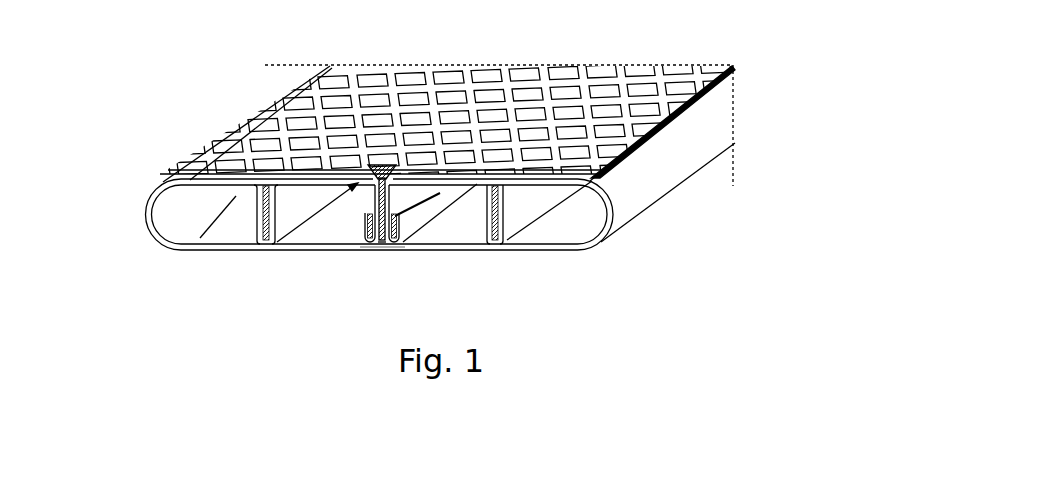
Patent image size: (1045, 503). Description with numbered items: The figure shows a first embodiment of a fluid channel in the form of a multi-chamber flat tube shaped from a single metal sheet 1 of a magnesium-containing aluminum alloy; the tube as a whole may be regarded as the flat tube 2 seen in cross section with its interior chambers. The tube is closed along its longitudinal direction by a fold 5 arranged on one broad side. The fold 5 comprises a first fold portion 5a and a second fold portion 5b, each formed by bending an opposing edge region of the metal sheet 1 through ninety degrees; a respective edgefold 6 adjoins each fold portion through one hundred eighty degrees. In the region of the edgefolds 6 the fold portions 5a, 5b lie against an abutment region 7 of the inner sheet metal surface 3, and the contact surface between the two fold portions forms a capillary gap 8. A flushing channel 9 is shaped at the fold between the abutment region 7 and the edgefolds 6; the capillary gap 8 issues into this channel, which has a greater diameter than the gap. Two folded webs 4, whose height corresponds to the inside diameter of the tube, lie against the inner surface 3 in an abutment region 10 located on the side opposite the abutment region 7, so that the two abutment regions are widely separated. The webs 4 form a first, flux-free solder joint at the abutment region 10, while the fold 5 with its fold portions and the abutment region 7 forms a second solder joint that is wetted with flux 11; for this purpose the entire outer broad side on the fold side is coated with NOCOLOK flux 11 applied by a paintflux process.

The metal sheet 1 is at (146, 192).
The grid 2 is at (210, 140).
The inner sheet metal surface 3 is at (313, 234).
The folded webs 4 is at (259, 220).
The fold 5 is at (282, 135).
The first fold portion 5a is at (368, 214).
The second fold portion 5b is at (394, 208).
The edgefold 6 is at (397, 238).
The abutment region 7 is at (372, 256).
The capillary gap 8 is at (388, 168).
The flushing channel 9 is at (383, 247).
The abutment region 10 is at (234, 198).
The flux 11 is at (580, 79).